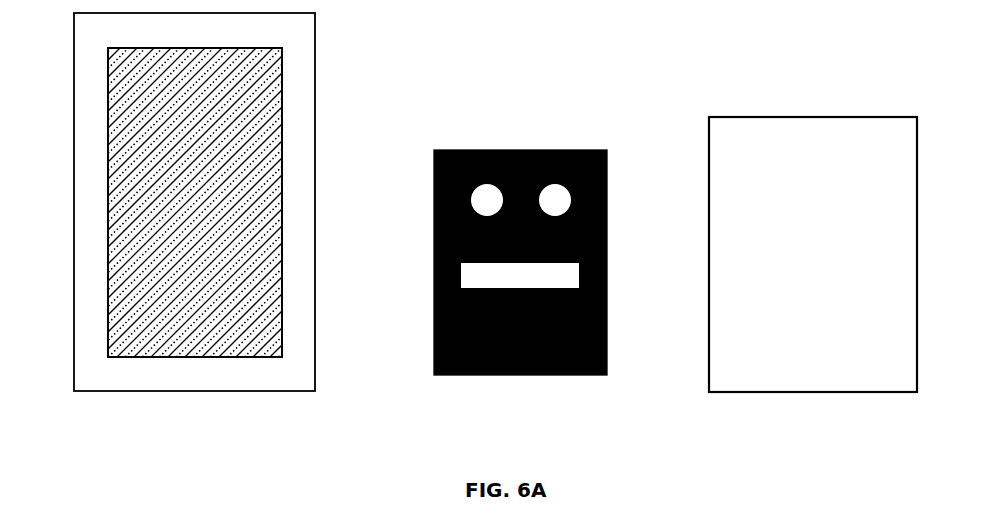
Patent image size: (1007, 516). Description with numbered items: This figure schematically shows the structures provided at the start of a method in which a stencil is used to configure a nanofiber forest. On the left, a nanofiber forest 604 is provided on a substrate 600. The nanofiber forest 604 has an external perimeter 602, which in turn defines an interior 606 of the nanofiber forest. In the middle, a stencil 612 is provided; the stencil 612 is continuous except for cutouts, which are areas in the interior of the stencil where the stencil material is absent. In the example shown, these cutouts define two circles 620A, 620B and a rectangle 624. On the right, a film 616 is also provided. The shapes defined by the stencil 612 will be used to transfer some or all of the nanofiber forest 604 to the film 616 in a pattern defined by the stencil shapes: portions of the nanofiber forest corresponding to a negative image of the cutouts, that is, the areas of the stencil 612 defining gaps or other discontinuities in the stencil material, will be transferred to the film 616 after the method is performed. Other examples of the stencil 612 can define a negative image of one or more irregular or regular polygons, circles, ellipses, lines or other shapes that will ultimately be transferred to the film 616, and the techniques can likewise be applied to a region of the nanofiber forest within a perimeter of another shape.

The substrate 600 is at (192, 391).
The external perimeter 602 is at (282, 132).
The nanofiber forest 604 is at (270, 357).
The interior 606 is at (262, 195).
The stencil 612 is at (434, 365).
The film 616 is at (812, 392).
The circle 620A is at (487, 170).
The circle 620B is at (543, 172).
The rectangle 624 is at (540, 254).